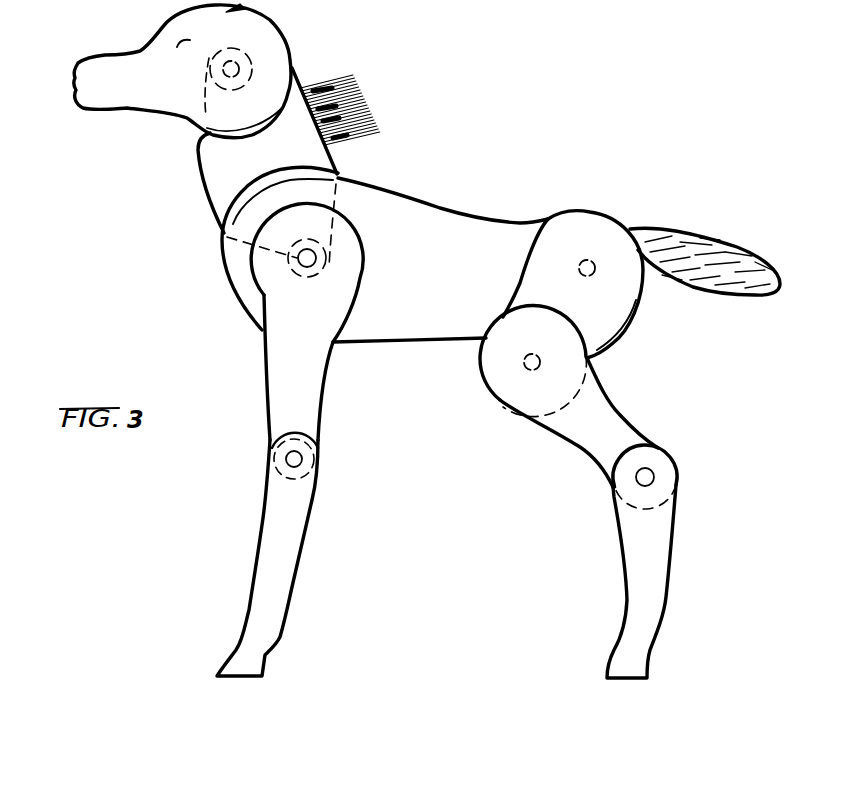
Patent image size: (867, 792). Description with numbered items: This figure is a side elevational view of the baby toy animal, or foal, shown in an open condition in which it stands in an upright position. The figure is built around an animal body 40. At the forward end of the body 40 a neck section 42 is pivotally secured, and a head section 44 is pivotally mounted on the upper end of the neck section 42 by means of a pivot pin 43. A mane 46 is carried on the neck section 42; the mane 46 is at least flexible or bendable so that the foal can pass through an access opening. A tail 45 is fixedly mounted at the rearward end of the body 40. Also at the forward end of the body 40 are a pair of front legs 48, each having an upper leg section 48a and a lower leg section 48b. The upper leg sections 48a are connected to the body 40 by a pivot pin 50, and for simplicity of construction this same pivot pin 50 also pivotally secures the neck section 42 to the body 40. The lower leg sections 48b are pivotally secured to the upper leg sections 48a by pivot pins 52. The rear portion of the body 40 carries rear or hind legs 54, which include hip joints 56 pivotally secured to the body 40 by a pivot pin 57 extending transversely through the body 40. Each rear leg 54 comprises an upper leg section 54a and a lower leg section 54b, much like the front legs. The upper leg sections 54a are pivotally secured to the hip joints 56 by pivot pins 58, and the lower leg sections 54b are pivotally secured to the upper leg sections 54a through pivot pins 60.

The animal body 40 is at (430, 215).
The neck section 42 is at (213, 192).
The pivot pin 43 is at (235, 69).
The head section 44 is at (271, 45).
The tail 45 is at (700, 238).
The mane 46 is at (372, 116).
The front legs 48 is at (278, 439).
The upper leg sections 48a is at (318, 387).
The lower leg sections 48b is at (291, 543).
The pivot pin 50 is at (297, 262).
The pivot pins 52 is at (302, 459).
The rear legs 54 is at (598, 492).
The upper leg sections 54a is at (556, 396).
The lower leg sections 54b is at (657, 570).
The hip joints 56 is at (618, 299).
The pivot pin 57 is at (588, 259).
The pivot pins 58 is at (527, 370).
The pivot pins 60 is at (636, 480).